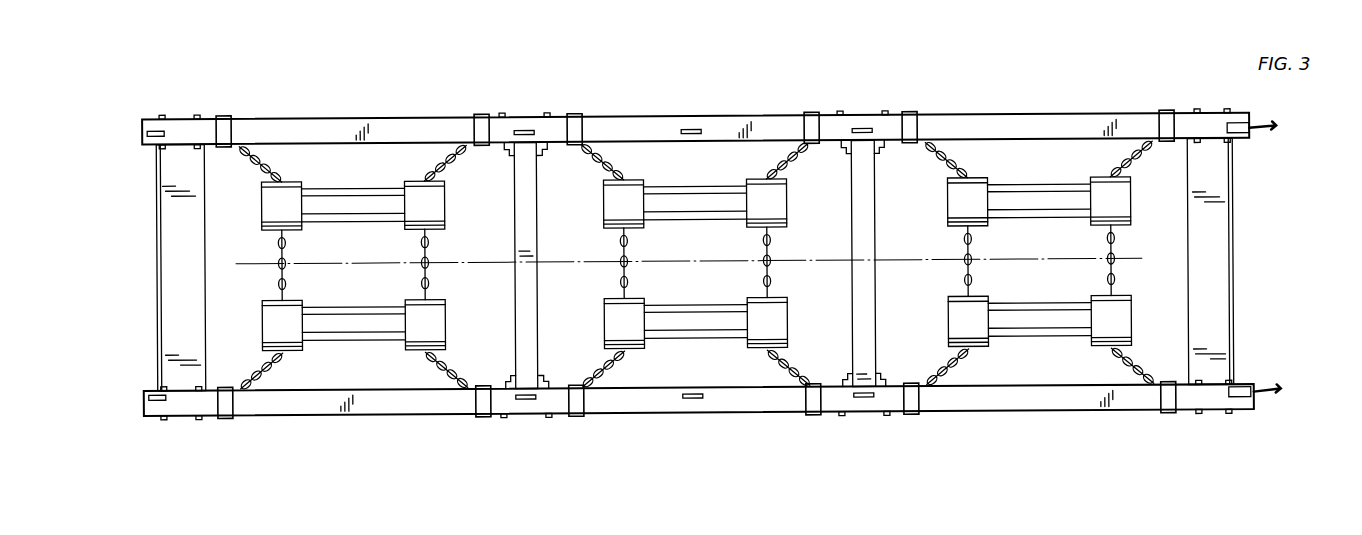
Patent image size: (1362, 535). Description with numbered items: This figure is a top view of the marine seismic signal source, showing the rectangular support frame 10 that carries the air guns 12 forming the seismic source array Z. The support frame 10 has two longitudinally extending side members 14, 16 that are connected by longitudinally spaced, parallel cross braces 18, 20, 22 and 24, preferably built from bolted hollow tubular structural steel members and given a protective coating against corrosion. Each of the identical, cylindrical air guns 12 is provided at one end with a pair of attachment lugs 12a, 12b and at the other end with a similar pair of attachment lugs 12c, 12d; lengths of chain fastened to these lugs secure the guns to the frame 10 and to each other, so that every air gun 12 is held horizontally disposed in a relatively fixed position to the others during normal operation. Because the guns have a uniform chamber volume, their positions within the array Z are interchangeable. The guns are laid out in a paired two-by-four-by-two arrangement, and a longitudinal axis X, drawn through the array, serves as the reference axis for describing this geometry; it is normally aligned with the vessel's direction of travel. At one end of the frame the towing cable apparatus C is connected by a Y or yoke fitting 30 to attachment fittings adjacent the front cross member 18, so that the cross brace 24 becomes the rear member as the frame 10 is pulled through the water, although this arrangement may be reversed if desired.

The support frame 10 is at (355, 432).
The air guns 12 is at (698, 332).
The attachment lug 12a is at (287, 353).
The attachment lug 12b is at (283, 180).
The attachment lug 12c is at (422, 353).
The attachment lug 12d is at (421, 180).
The side member 14 is at (1120, 402).
The side member 16 is at (1072, 114).
The front cross member 18 is at (1222, 270).
The cross brace 20 is at (866, 378).
The cross brace 22 is at (527, 382).
The rear cross brace 24 is at (165, 317).
The yoke fitting 30 is at (1244, 137).
The towing cable apparatus C is at (1267, 127).
The longitudinal axis X is at (687, 261).
The air gun source array Z is at (995, 433).